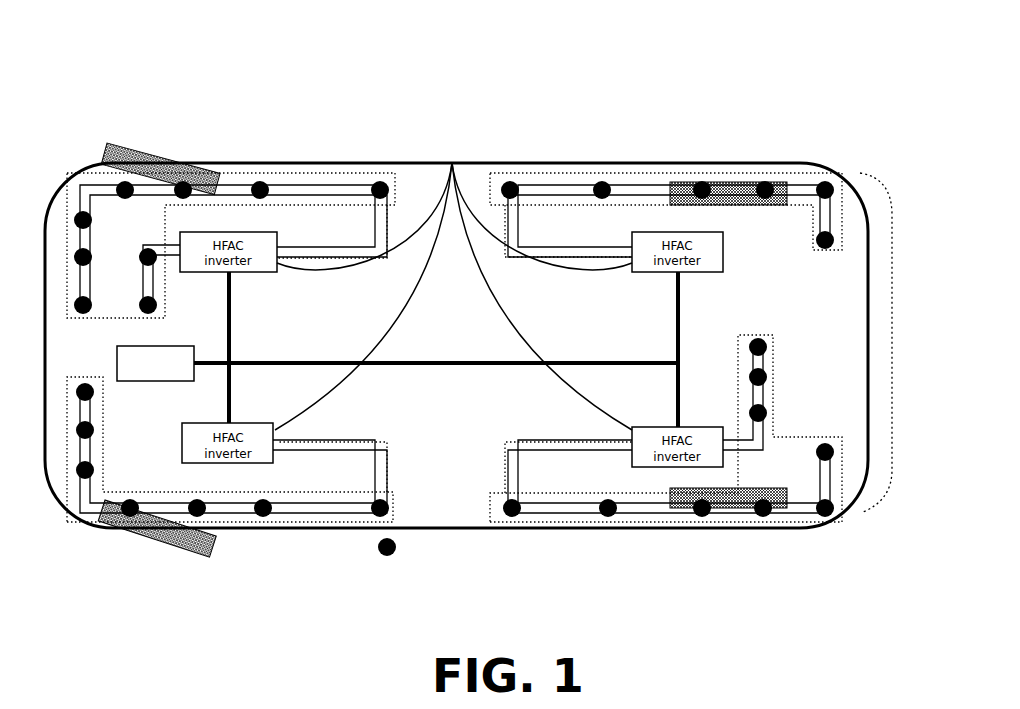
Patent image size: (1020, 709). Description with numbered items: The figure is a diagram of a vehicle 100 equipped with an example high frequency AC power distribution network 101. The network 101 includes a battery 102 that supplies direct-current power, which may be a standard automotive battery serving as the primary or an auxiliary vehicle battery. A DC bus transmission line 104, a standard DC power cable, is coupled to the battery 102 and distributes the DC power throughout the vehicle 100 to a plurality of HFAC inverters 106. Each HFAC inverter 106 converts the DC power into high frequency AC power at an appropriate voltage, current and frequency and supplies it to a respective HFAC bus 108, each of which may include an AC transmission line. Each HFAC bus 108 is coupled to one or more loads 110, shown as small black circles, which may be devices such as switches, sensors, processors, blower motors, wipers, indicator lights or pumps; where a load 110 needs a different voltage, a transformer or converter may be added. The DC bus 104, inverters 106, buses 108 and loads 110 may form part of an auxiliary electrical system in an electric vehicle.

The vehicle 100 is at (517, 40).
The high frequency AC power distribution network 101 is at (892, 343).
The battery 102 is at (194, 353).
The DC bus transmission line 104 is at (493, 361).
The high frequency AC inverter 106 is at (452, 163).
The HFAC bus 108 is at (367, 85).
The load 110 is at (454, 370).